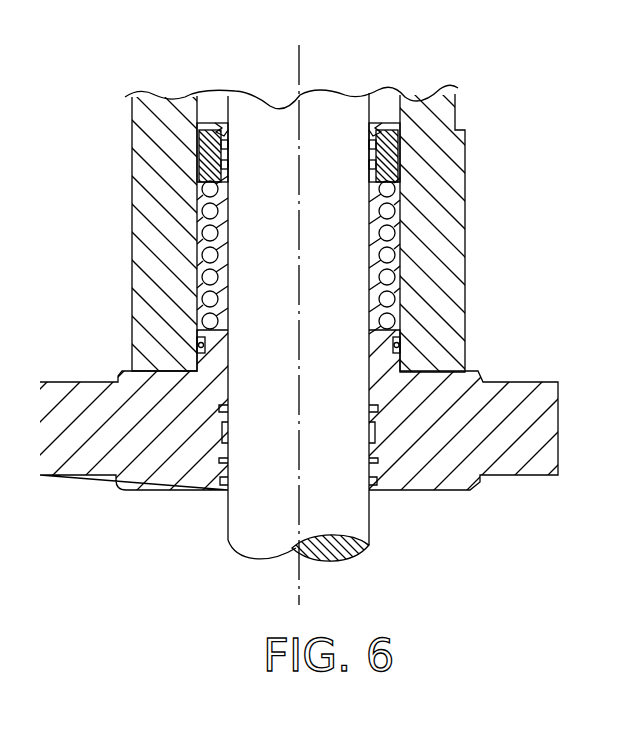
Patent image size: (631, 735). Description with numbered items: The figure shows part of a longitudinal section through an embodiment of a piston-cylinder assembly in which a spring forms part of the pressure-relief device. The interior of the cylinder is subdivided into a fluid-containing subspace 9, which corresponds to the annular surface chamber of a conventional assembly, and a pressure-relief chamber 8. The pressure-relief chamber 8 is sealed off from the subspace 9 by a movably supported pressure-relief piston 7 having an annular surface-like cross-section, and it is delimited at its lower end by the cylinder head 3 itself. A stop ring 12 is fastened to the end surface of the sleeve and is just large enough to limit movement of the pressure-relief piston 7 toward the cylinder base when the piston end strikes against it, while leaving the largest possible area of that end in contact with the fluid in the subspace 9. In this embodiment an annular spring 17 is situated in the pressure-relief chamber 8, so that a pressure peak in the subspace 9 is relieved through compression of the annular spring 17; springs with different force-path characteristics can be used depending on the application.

The cylinder head 3 is at (500, 445).
The pressure-relief piston 7 is at (395, 158).
The pressure-relief chamber 8 is at (395, 265).
The subspace 9 is at (385, 103).
The stop ring 12 is at (215, 131).
The annular spring 17 is at (207, 250).